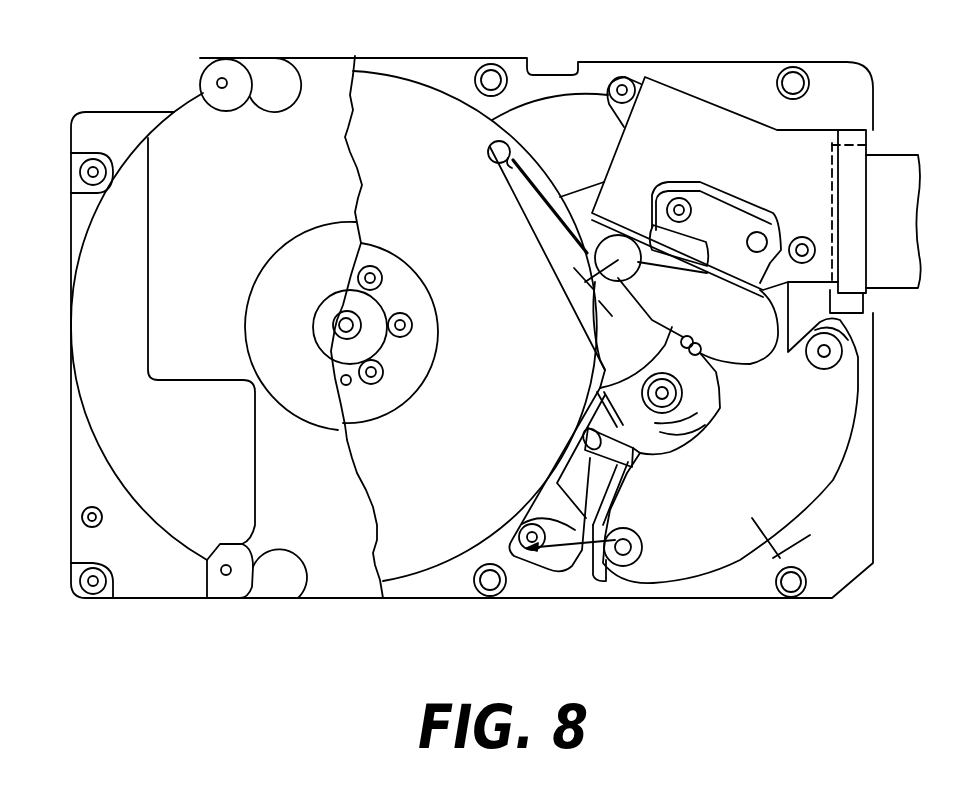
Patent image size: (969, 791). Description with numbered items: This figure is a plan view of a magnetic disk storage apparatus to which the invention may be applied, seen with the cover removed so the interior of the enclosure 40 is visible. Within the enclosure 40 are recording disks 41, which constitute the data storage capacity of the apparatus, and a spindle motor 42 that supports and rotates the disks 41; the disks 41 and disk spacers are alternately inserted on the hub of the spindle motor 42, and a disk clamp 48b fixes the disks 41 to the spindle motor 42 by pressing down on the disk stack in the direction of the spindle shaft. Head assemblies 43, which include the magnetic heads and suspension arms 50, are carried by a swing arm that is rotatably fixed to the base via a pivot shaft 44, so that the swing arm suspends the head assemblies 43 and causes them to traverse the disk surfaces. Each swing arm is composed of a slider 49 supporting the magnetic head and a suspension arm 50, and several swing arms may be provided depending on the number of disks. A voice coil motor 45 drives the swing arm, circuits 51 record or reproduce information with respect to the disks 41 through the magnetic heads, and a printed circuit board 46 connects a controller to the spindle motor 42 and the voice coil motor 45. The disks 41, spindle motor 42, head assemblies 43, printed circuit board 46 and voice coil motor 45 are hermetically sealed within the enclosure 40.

The enclosure 40 is at (445, 72).
The recording disks 41 is at (395, 95).
The spindle motor 42 is at (342, 356).
The head assemblies 43 is at (538, 248).
The pivot shaft 44 is at (675, 388).
The voice coil motor 45 is at (668, 578).
The printed circuit board 46 is at (768, 298).
The disk clamp 48b is at (381, 394).
The slider 49 is at (487, 150).
The suspension arm 50 is at (592, 317).
The circuits 51 is at (611, 207).